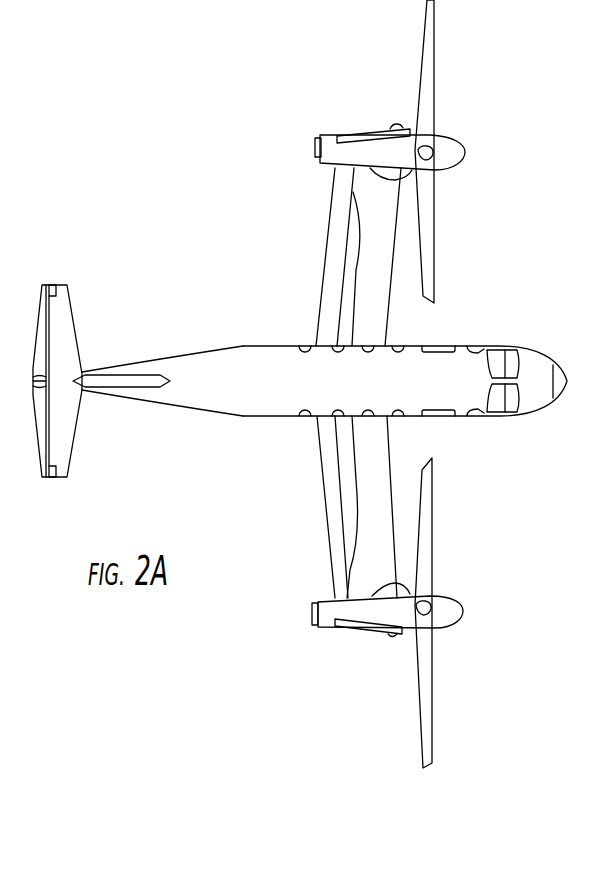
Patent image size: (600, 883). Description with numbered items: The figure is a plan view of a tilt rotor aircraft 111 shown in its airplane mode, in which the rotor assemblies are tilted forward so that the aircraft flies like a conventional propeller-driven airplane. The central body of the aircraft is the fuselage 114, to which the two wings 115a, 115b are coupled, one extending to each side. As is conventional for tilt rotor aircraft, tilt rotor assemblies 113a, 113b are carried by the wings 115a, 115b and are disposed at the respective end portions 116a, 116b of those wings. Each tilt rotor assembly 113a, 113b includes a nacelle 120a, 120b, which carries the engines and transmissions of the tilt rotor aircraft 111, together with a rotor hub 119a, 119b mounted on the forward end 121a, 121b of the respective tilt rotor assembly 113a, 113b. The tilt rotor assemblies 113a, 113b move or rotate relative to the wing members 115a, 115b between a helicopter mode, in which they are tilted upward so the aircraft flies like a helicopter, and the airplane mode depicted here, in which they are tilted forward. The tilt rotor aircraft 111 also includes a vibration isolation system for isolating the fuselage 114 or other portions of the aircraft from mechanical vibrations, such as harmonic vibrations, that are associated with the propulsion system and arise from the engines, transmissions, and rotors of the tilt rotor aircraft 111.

The tilt rotor aircraft 111 is at (183, 316).
The tilt rotor assembly 113a is at (330, 120).
The tilt rotor assembly 113b is at (328, 642).
The fuselage 114 is at (228, 418).
The wing 115a is at (327, 248).
The wing 115b is at (325, 517).
The end portion of wing 116a is at (326, 178).
The end portion of wing 116b is at (324, 584).
The rotor hub 119a is at (462, 140).
The rotor hub 119b is at (458, 622).
The nacelle 120a is at (330, 136).
The nacelle 120b is at (327, 627).
The forward end of tilt rotor assembly 121a is at (414, 171).
The forward end of tilt rotor assembly 121b is at (411, 592).